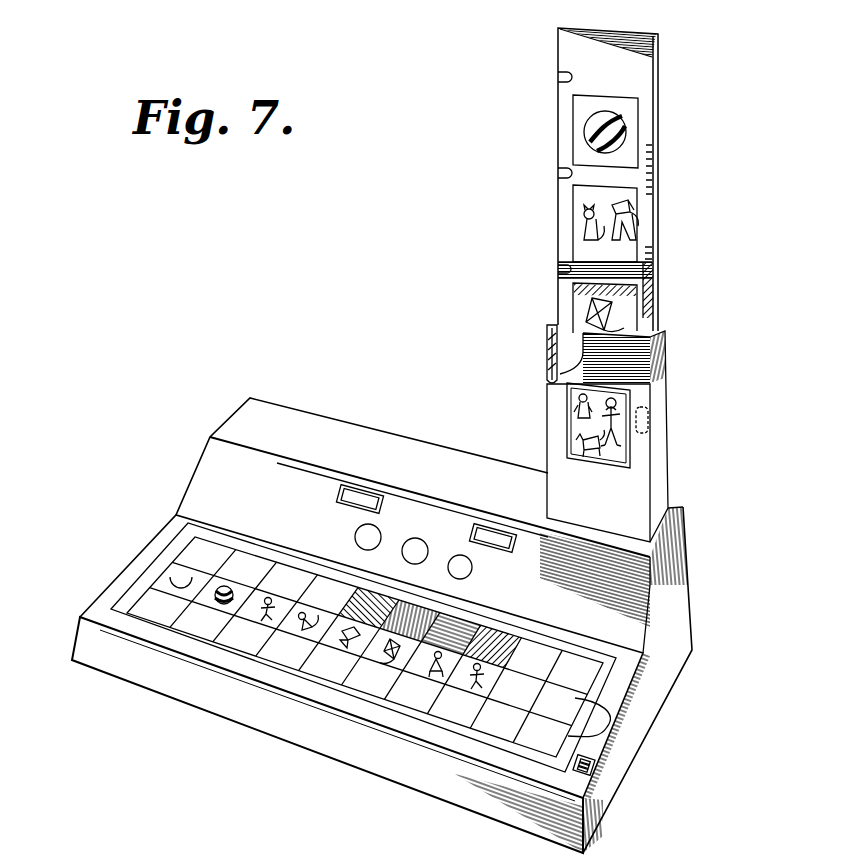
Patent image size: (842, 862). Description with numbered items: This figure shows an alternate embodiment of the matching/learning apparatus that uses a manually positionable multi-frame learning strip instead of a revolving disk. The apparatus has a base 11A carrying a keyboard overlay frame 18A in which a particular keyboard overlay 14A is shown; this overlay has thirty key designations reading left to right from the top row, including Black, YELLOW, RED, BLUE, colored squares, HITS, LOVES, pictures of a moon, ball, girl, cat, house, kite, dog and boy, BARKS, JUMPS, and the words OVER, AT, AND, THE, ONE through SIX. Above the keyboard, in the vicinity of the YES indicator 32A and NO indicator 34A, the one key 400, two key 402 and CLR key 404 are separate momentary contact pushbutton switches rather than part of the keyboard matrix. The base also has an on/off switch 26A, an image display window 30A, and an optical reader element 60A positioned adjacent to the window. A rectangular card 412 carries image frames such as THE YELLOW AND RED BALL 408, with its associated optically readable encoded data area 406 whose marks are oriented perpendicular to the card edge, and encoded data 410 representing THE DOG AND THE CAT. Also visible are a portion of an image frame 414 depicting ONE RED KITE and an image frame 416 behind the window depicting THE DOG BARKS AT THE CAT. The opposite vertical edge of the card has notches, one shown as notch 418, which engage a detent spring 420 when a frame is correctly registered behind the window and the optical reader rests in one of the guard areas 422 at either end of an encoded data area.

The base 11A is at (667, 633).
The keyboard overlay 14A is at (178, 573).
The keyboard overlay frame 18A is at (128, 606).
The on/off switch 26A is at (594, 769).
The image display window 30A is at (567, 410).
The YES indicator 32A is at (338, 500).
The NO indicator 34A is at (516, 548).
The optical reader element 60A is at (644, 433).
The "1" key 400 is at (382, 527).
The "2" key 402 is at (423, 539).
The "CLR" key 404 is at (474, 567).
The encoded data area 406 is at (648, 158).
The image frame 408 is at (582, 113).
The encoded data area 410 is at (650, 252).
The rectangular card 412 is at (560, 218).
The image frame 414 is at (575, 302).
The image frame 416 is at (583, 434).
The notch 418 is at (558, 172).
The detent spring 420 is at (556, 362).
The guard area 422 is at (652, 312).